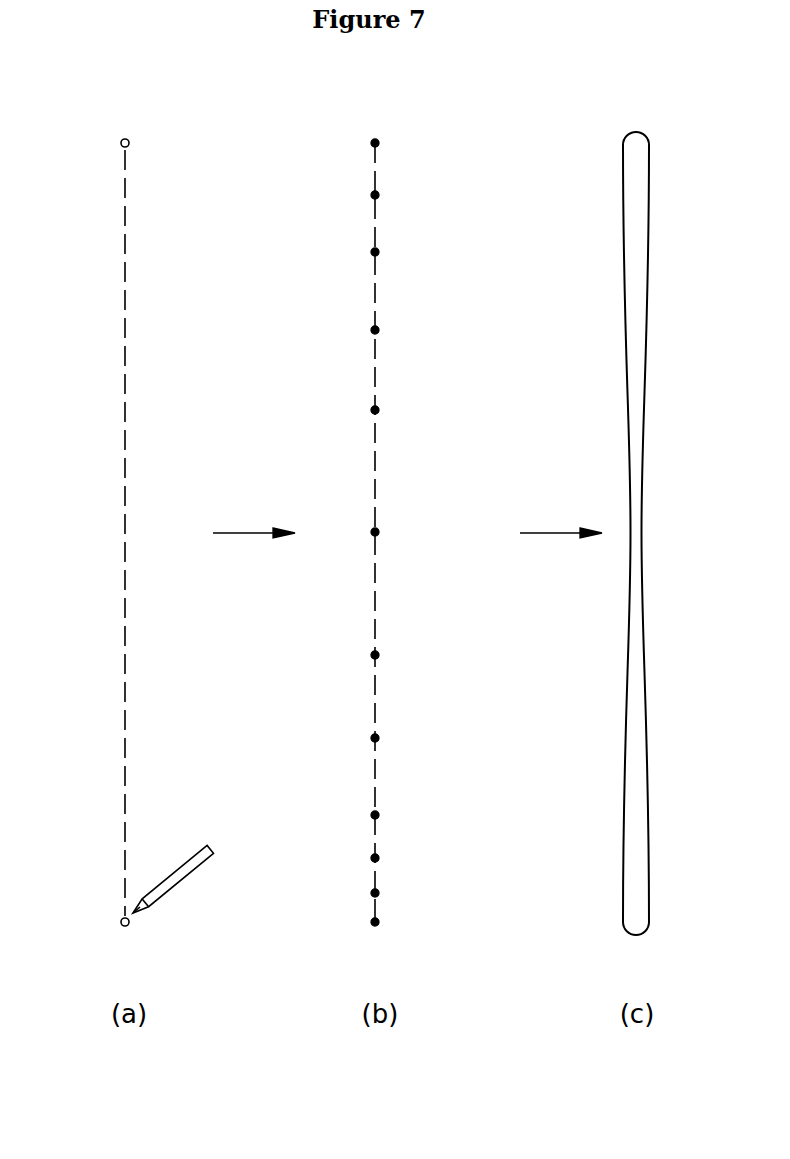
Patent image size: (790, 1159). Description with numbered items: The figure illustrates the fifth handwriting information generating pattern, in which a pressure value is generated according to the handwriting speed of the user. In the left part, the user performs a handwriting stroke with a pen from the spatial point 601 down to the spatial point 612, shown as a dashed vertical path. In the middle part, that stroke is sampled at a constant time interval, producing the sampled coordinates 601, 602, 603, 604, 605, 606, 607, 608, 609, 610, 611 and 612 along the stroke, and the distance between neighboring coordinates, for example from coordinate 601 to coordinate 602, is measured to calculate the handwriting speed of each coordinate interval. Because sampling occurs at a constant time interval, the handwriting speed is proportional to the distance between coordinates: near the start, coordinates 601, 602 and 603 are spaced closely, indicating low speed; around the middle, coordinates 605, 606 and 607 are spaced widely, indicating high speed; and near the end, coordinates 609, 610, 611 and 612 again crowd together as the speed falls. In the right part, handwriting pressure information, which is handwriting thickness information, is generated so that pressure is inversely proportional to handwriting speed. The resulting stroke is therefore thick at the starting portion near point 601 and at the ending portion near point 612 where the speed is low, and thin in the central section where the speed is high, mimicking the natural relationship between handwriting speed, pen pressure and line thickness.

The spatial point 601 is at (125, 139).
The sampled coordinate 602 is at (379, 195).
The sampled coordinate 603 is at (379, 252).
The sampled coordinate 604 is at (379, 330).
The sampled coordinate 605 is at (379, 410).
The sampled coordinate 606 is at (379, 532).
The sampled coordinate 607 is at (379, 655).
The sampled coordinate 608 is at (379, 738).
The sampled coordinate 609 is at (379, 815).
The sampled coordinate 610 is at (379, 858).
The sampled coordinate 611 is at (379, 893).
The spatial point 612 is at (127, 926).